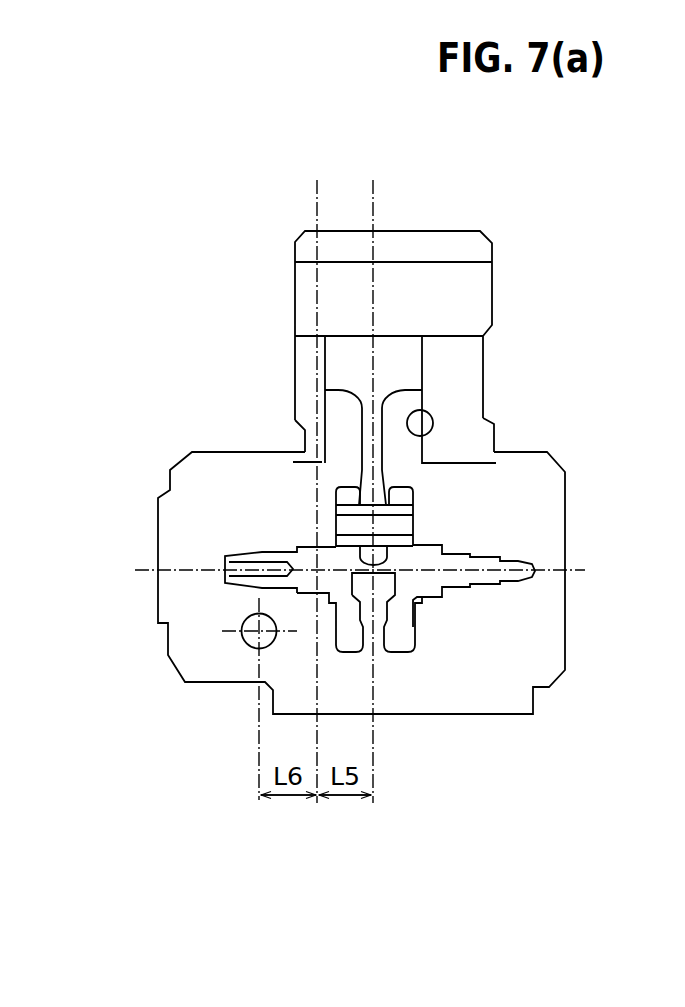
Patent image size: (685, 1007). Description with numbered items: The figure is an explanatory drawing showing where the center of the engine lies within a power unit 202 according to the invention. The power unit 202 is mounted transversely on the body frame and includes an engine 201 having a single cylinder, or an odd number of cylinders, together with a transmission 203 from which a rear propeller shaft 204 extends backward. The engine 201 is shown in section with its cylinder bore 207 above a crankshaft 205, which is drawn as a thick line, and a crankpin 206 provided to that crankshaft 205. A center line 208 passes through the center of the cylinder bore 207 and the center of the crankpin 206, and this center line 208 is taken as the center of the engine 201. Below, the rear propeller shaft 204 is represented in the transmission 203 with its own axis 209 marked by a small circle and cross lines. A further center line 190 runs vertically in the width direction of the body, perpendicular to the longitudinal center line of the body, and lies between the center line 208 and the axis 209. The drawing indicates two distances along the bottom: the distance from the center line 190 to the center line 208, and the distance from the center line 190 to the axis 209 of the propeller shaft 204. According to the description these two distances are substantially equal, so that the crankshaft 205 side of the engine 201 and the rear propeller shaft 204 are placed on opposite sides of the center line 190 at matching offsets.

The center line 190 is at (316, 185).
The center line 208 is at (373, 190).
The power unit 202 is at (211, 261).
The engine 201 is at (495, 286).
The transmission 203 is at (157, 496).
The cylinder bore 207 is at (425, 416).
The crankpin 206 is at (417, 508).
The crankshaft 205 is at (490, 553).
The rear propeller shaft 204 is at (259, 632).
The axis 209 is at (250, 642).